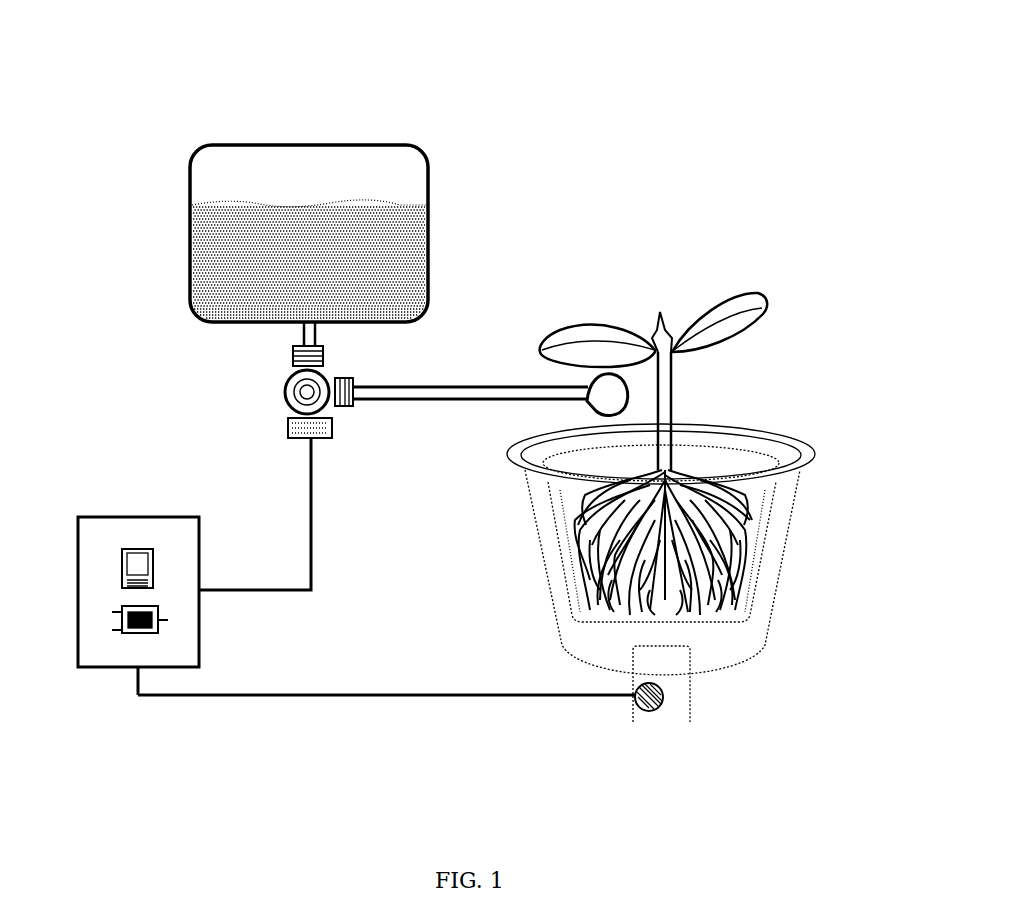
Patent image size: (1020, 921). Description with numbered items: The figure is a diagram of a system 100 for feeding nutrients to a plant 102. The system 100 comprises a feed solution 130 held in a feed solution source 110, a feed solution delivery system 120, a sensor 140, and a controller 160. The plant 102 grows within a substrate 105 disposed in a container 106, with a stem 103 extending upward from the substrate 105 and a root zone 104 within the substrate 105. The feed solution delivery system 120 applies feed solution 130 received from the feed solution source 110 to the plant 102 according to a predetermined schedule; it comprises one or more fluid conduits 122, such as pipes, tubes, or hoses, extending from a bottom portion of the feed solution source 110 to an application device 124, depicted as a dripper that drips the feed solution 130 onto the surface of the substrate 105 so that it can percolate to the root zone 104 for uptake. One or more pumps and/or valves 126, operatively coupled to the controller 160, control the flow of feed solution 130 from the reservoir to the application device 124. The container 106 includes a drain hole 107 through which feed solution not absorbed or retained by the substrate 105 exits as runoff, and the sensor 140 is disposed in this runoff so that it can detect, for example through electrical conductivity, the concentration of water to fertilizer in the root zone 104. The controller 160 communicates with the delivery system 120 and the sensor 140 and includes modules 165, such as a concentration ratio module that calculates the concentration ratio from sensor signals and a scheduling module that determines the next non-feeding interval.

The system 100 is at (222, 113).
The plant 102 is at (762, 270).
The stem 103 is at (672, 390).
The root zone 104 is at (818, 483).
The substrate 105 is at (772, 460).
The container 106 is at (745, 650).
The drain hole 107 is at (700, 668).
The feed solution source 110 is at (445, 198).
The feed solution delivery system 120 is at (478, 355).
The fluid conduit 122 is at (372, 400).
The application device 124 is at (585, 405).
The pump and/or valve 126 is at (285, 396).
The feed solution 130 is at (215, 225).
The sensor 140 is at (640, 705).
The controller 160 is at (110, 520).
The modules 165 is at (153, 567).